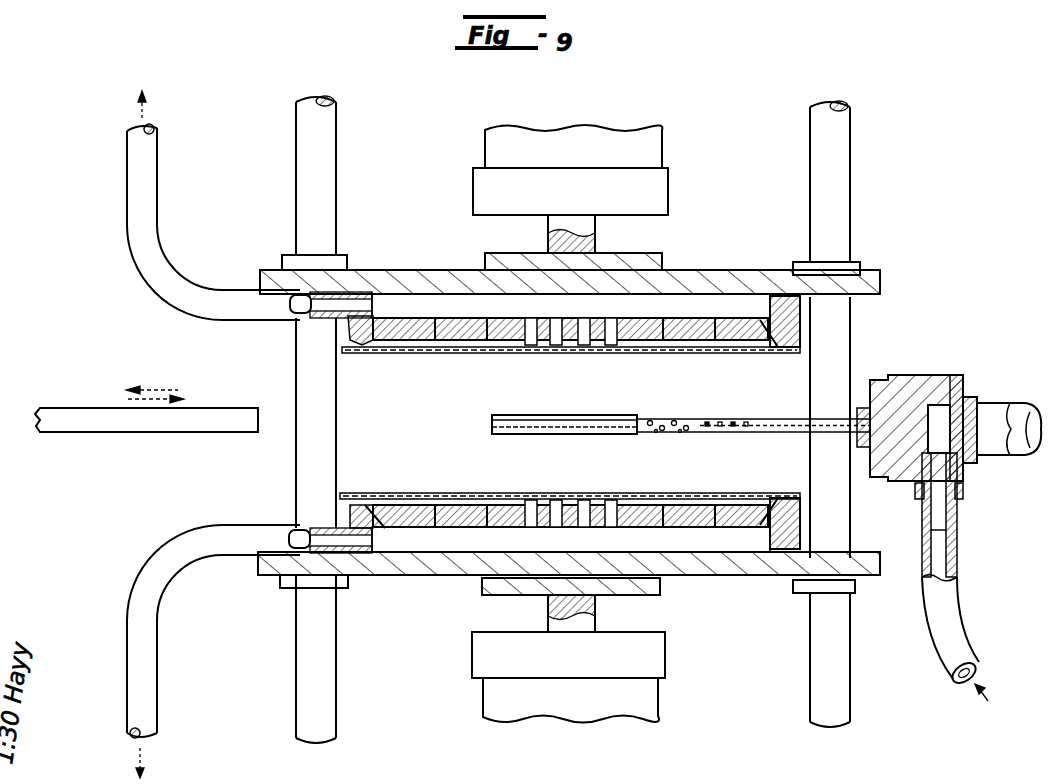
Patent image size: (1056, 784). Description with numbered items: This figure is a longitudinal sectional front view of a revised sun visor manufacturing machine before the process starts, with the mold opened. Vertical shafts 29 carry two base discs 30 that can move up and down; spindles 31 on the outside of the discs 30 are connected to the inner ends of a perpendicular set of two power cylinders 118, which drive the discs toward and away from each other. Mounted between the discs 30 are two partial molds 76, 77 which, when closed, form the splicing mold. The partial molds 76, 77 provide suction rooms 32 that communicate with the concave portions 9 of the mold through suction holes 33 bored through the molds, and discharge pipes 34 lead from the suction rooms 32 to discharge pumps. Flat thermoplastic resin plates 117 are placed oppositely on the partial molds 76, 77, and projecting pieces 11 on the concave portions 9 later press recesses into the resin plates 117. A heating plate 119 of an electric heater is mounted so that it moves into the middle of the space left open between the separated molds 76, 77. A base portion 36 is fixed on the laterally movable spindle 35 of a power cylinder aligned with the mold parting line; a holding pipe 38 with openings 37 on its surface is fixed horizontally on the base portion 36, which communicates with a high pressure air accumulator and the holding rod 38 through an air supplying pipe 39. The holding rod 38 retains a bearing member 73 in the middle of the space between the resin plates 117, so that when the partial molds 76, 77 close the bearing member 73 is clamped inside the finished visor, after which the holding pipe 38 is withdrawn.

The concave portions 9 is at (700, 330).
The projecting pieces 11 is at (533, 346).
The vertical shafts 29 is at (305, 163).
The base discs 30 is at (740, 290).
The spindles 31 is at (597, 232).
The suction rooms 32 is at (385, 298).
The suction holes 33 is at (470, 318).
The discharge pipes 34 is at (170, 548).
The laterally movable spindle 35 is at (996, 415).
The base portion 36 is at (932, 378).
The openings 37 is at (668, 436).
The holding pipe 38 is at (785, 418).
The air supplying pipe 39 is at (968, 577).
The bearing member 73 is at (596, 403).
The partial mold 76 is at (802, 318).
The partial mold 77 is at (802, 536).
The resin plates 117 is at (392, 492).
The power cylinders 118 is at (640, 140).
The heating plate 119 is at (146, 433).